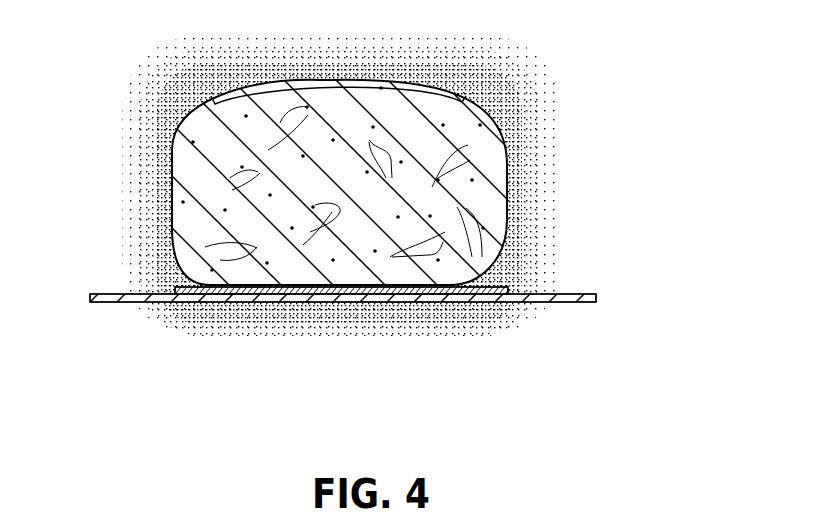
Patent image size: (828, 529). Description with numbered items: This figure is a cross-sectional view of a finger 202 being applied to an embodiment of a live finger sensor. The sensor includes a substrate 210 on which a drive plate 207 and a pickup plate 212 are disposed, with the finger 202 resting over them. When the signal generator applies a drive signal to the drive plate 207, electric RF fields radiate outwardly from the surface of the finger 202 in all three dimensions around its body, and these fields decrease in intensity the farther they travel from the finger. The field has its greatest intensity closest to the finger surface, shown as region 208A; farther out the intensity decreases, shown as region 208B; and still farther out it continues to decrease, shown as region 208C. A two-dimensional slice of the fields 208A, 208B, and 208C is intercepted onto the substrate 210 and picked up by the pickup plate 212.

The finger 202 is at (483, 101).
The drive plate 207 is at (243, 280).
The electric RF field region of greatest intensity 208A is at (508, 245).
The electric RF field region of decreased intensity 208B is at (530, 202).
The electric RF field region of further decreased intensity 208C is at (547, 165).
The substrate 210 is at (600, 300).
The pickup plate 212 is at (303, 297).